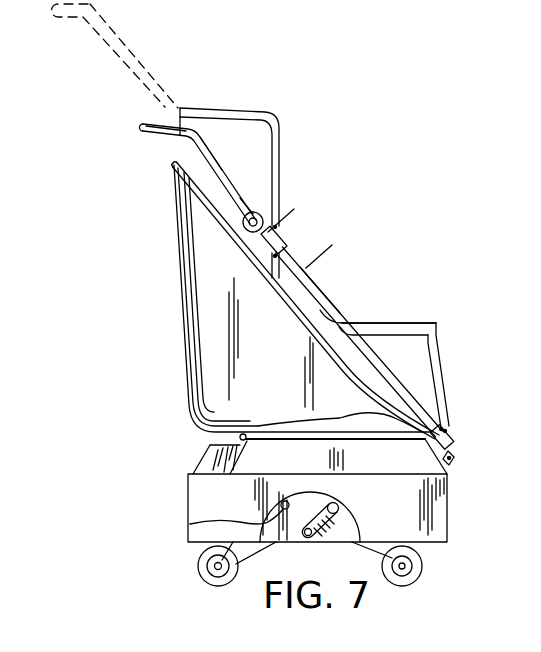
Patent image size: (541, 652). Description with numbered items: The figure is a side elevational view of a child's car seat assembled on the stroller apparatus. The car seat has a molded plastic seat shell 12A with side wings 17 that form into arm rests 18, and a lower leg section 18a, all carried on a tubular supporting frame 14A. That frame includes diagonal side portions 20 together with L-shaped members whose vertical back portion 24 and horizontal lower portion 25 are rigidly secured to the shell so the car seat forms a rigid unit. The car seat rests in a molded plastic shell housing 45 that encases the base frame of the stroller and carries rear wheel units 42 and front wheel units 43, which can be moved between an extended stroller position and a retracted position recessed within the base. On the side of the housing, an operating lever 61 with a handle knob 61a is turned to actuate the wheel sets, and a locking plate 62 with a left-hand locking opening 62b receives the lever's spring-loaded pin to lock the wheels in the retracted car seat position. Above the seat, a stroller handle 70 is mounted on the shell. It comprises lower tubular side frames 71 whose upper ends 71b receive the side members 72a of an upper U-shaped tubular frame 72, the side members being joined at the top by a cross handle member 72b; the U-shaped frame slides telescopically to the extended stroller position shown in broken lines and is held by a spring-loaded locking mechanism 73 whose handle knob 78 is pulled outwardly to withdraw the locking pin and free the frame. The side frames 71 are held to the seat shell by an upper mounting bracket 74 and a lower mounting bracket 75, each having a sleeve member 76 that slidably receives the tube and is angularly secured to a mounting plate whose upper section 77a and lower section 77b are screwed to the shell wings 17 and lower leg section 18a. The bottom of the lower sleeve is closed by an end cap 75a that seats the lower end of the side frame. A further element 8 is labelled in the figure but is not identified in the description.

The push rod 8 is at (305, 300).
The seat shell 12A is at (375, 257).
The tubular supporting frame 14A is at (181, 380).
The side wings 17 is at (281, 196).
The arm rests 18 is at (390, 325).
The lower leg section 18a is at (438, 374).
The diagonal side portions 20 is at (330, 352).
The vertical back portion 24 is at (183, 318).
The horizontal lower portion 25 is at (323, 433).
The rear wheel units 42 is at (189, 583).
The front wheel units 43 is at (392, 593).
The shell housing 45 is at (176, 465).
The operating lever 61 is at (314, 538).
The handle knob 61a is at (339, 508).
The locking plate 62 is at (190, 524).
The left-hand locking opening 62b is at (278, 504).
The stroller handle 70 is at (340, 246).
The lower tubular side frames 71 is at (338, 312).
The upper ends of side frames 71b is at (240, 198).
The upper U-shaped tubular frame 72 is at (160, 147).
The side members 72a is at (222, 160).
The cross handle member 72b is at (143, 128).
The spring-loaded locking mechanism 73 is at (230, 235).
The upper side mounting bracket 74 is at (295, 261).
The lower side mounting bracket 75 is at (470, 430).
The end plugs or caps 75a is at (458, 455).
The sleeve member 76 is at (272, 243).
The upper section of mounting plate 77a is at (442, 428).
The lower section of mounting plate 77b is at (456, 462).
The handle knob 78 is at (540, 268).